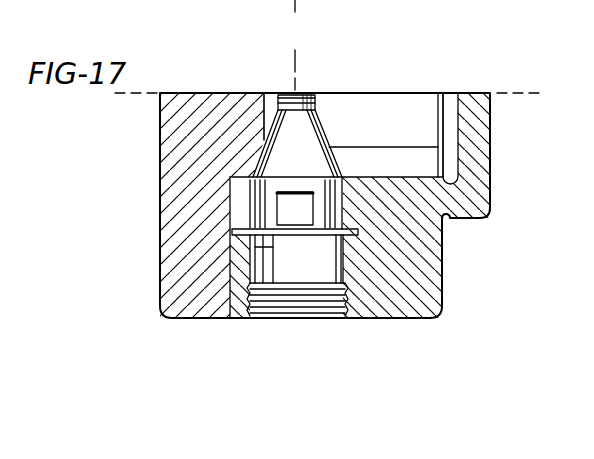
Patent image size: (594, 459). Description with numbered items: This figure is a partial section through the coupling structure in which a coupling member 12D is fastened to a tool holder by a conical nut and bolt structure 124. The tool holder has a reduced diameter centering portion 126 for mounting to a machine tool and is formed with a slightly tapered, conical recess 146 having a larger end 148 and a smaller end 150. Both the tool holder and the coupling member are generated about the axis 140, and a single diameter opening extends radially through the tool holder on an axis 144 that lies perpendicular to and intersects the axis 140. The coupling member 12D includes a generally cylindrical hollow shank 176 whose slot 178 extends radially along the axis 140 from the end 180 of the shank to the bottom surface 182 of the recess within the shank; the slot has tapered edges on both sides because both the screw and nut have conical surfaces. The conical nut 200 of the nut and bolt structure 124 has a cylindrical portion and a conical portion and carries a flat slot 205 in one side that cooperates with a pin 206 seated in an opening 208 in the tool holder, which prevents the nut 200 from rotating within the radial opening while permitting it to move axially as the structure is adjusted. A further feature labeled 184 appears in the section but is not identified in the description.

The coupling member 12D is at (158, 231).
The conical nut and bolt structure 124 is at (308, 92).
The reduced diameter centering portion 126 is at (448, 219).
The axis 140 is at (532, 74).
The axis of the radial opening 144 is at (297, 72).
The tapered recess 146 is at (357, 167).
The larger end of tapered recess 148 is at (456, 158).
The smaller end of tapered recess 150 is at (239, 170).
The hollow shank 176 is at (416, 205).
The slot 178 is at (373, 157).
The end of hollow shank 180 is at (445, 176).
The bottom surface of recess 182 is at (266, 96).
The chamber 184 is at (376, 125).
The conical nut 200 is at (252, 260).
The flat slot 205 is at (288, 204).
The pin 206 is at (284, 258).
The opening 208 is at (232, 228).